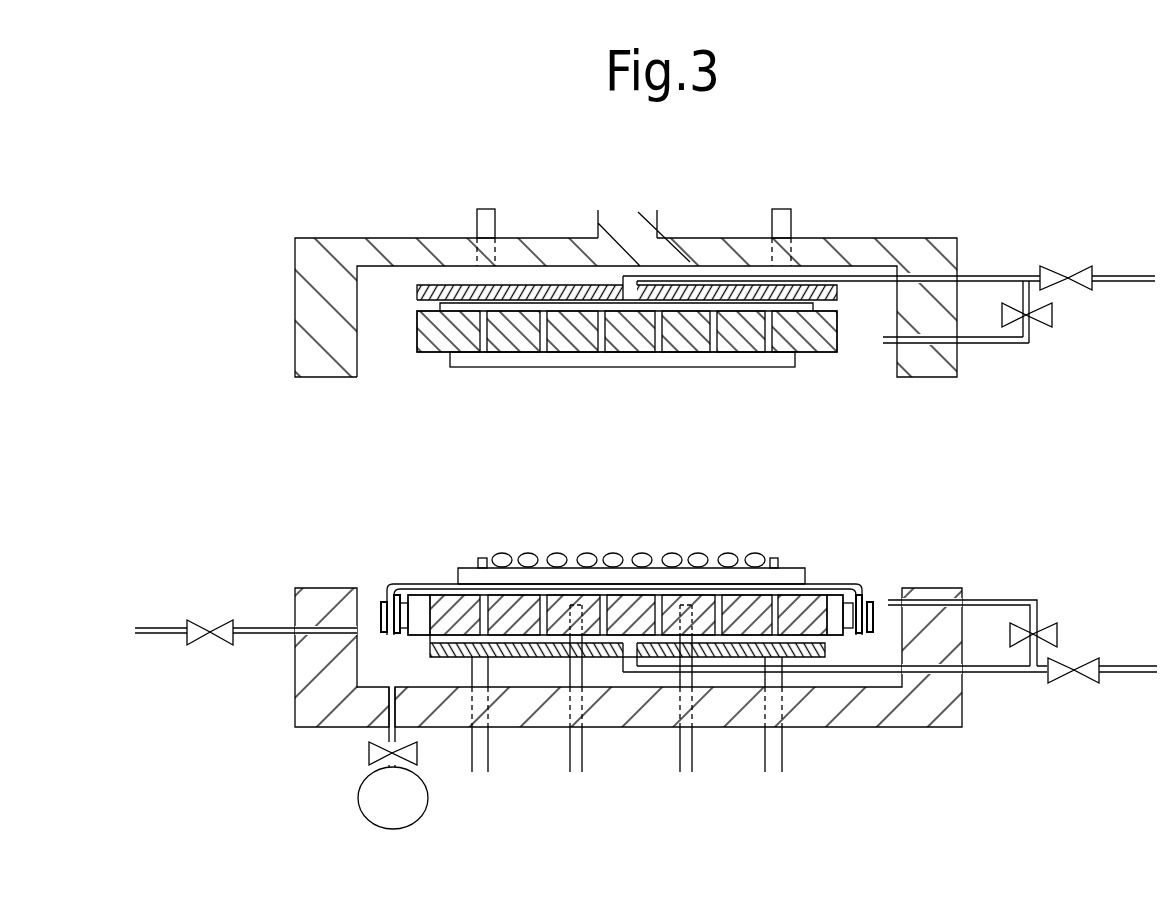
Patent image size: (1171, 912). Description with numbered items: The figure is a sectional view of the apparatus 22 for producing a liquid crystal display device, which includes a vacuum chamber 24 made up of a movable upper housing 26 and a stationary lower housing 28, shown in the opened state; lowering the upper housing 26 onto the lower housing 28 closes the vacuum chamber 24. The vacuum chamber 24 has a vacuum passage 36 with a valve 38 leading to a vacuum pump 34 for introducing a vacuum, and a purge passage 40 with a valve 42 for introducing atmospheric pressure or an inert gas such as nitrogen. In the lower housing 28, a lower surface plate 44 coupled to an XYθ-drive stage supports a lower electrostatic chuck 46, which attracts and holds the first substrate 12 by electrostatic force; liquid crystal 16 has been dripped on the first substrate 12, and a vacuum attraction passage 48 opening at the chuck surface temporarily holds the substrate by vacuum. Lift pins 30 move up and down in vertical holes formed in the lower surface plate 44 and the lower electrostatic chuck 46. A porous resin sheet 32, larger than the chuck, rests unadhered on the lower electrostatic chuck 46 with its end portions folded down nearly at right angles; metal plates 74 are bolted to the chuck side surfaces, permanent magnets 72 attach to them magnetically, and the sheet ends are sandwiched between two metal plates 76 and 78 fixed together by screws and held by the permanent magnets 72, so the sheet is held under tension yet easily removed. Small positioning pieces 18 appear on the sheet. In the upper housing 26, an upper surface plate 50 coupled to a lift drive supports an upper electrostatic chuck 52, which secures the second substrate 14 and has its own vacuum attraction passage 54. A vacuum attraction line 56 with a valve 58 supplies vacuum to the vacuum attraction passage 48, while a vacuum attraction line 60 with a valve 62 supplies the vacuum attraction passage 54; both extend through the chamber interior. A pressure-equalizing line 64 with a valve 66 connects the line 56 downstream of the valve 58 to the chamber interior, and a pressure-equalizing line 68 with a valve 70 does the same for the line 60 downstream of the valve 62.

The first substrate 12 is at (790, 567).
The second substrate 14 is at (791, 360).
The liquid crystal 16 is at (671, 554).
The positioning pieces 18 is at (480, 557).
The apparatus 22 is at (587, 243).
The vacuum chamber 24 is at (676, 461).
The upper housing 26 is at (296, 300).
The lower housing 28 is at (300, 700).
The lift pins 30 is at (652, 673).
The porous resin sheet 32 is at (712, 585).
The vacuum pump 34 is at (430, 814).
The vacuum passage 36 is at (384, 730).
The valve 38 is at (368, 753).
The purge passage 40 is at (160, 634).
The valve 42 is at (207, 620).
The lower surface plate 44 is at (540, 660).
The lower electrostatic chuck 46 is at (803, 603).
The vacuum attraction passage 48 is at (603, 605).
The upper surface plate 50 is at (541, 285).
The upper electrostatic chuck 52 is at (840, 344).
The vacuum attraction passage 54 is at (654, 353).
The vacuum attraction line 56 is at (1140, 674).
The valve 58 is at (1066, 684).
The vacuum attraction line 60 is at (1140, 275).
The valve 62 is at (1068, 266).
The pressure-equalizing line 64 is at (1000, 600).
The valve 66 is at (1040, 626).
The pressure-equalizing line 68 is at (1000, 345).
The valve 70 is at (1054, 315).
The permanent magnets 72 is at (401, 633).
The metal plates 74 is at (418, 603).
The metal plate 76 is at (397, 597).
The metal plate 78 is at (381, 605).